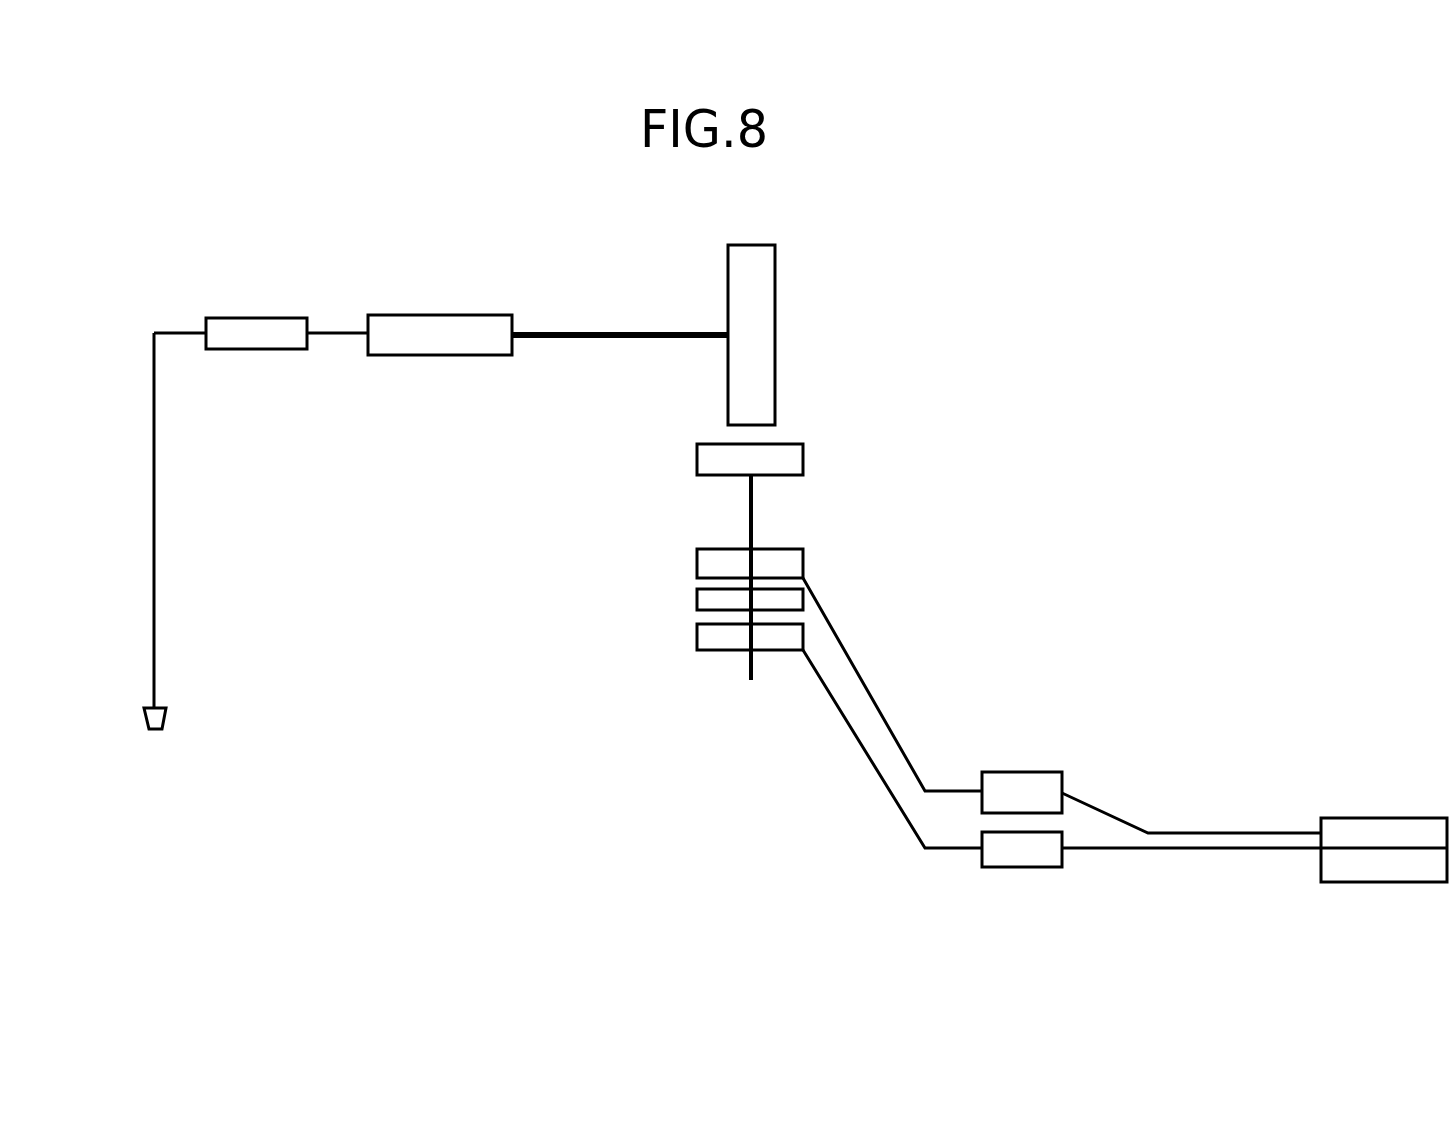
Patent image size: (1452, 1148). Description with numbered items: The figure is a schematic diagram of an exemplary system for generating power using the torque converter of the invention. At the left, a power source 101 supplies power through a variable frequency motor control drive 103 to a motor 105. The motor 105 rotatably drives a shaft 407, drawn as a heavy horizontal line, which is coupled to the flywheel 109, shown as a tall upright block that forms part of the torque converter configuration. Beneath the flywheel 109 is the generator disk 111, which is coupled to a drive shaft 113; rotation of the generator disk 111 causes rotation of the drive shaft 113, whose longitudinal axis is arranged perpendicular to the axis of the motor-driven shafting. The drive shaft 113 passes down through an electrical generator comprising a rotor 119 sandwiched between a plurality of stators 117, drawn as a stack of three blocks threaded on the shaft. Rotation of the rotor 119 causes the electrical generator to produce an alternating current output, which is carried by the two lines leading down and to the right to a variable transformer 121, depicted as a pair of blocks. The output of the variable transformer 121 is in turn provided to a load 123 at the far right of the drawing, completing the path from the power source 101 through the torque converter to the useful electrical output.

The power source 101 is at (166, 718).
The variable frequency motor control drive 103 is at (222, 318).
The motor 105 is at (395, 315).
The shaft 407 is at (578, 338).
The flywheel 109 is at (775, 310).
The generator disk 111 is at (803, 460).
The drive shaft 113 is at (751, 517).
The stators 117 is at (697, 563).
The rotor 119 is at (697, 603).
The variable transformer 121 is at (1002, 772).
The load 123 is at (1392, 818).